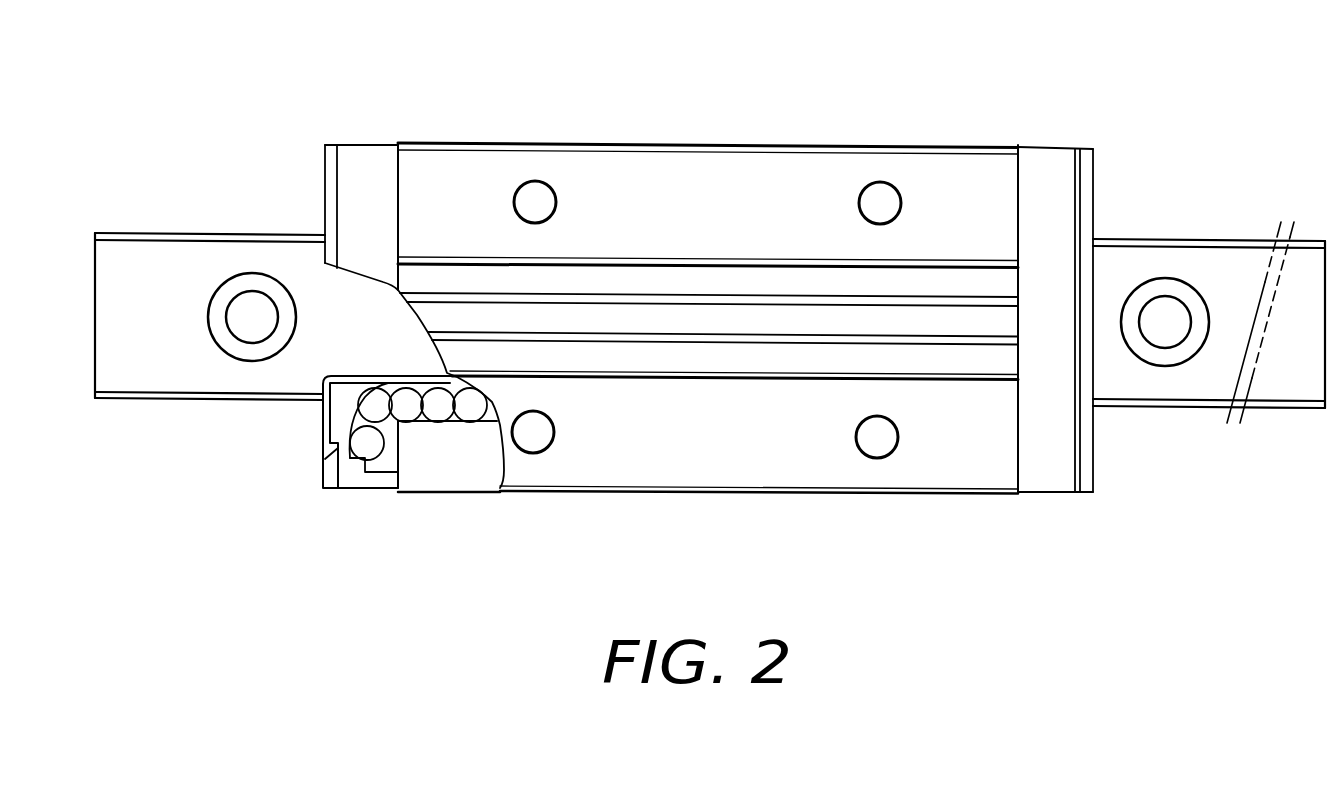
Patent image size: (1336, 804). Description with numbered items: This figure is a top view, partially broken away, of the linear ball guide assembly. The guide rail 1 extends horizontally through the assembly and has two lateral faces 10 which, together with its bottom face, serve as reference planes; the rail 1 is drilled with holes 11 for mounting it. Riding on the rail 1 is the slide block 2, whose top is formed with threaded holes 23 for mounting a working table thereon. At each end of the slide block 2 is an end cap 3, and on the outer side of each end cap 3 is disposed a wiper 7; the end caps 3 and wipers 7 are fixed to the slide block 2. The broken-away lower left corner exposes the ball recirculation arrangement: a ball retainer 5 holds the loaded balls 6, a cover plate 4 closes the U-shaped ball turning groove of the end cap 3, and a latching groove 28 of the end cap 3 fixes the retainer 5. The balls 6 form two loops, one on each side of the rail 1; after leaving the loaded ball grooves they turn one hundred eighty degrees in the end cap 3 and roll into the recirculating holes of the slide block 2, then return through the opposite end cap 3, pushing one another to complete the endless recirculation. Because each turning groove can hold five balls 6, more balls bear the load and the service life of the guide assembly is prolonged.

The guide rail 1 is at (142, 382).
The lateral faces 10 is at (218, 400).
The holes 11 is at (250, 307).
The slide block 2 is at (732, 167).
The threaded holes 23 is at (532, 200).
The end caps 3 is at (370, 177).
The wipers 7 is at (332, 177).
The ball retainers 5 is at (320, 410).
The latching grooves 28 is at (326, 476).
The cover plates 4 is at (390, 453).
The balls 6 is at (460, 402).